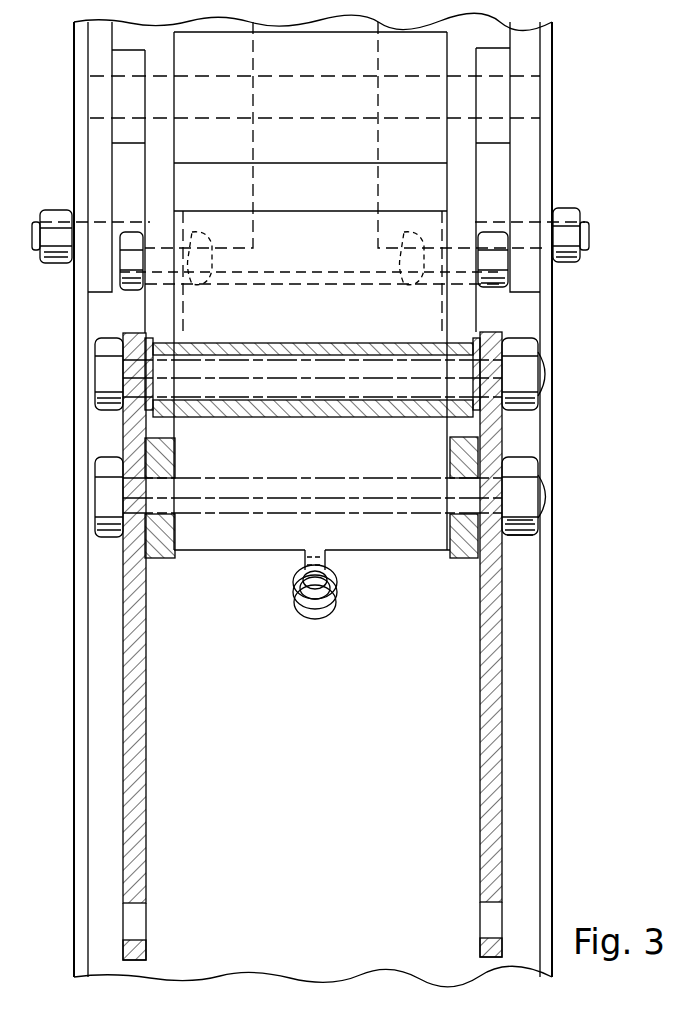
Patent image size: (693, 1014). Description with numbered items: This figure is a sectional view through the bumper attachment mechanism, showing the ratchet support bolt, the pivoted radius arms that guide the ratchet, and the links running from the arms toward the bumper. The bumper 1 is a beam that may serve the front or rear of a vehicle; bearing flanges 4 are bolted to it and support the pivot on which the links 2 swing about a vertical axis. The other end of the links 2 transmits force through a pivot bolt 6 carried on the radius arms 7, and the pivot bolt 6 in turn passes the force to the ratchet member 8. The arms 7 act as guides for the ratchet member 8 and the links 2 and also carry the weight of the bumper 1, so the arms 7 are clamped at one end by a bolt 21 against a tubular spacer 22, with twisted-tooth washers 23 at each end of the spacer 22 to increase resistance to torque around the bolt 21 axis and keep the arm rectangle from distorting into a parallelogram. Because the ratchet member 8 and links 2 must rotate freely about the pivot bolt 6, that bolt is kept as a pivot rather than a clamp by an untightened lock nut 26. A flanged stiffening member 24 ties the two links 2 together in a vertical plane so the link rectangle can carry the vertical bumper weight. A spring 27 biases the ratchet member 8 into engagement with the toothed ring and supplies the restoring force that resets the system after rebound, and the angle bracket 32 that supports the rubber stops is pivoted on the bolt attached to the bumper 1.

The bumper 1 is at (554, 890).
The links 2 is at (143, 190).
The bearing flanges 4 is at (100, 293).
The pivot bolt 6 is at (546, 498).
The radius arms 7 is at (146, 771).
The ratchet member 8 is at (385, 552).
The bolt 21 is at (545, 362).
The tubular spacer 22 is at (350, 343).
The twisted-tooth washers 23 is at (150, 341).
The stiffening member 24 is at (237, 210).
The lock nut 26 is at (513, 537).
The spring 27 is at (330, 613).
The angle bracket 32 is at (280, 290).